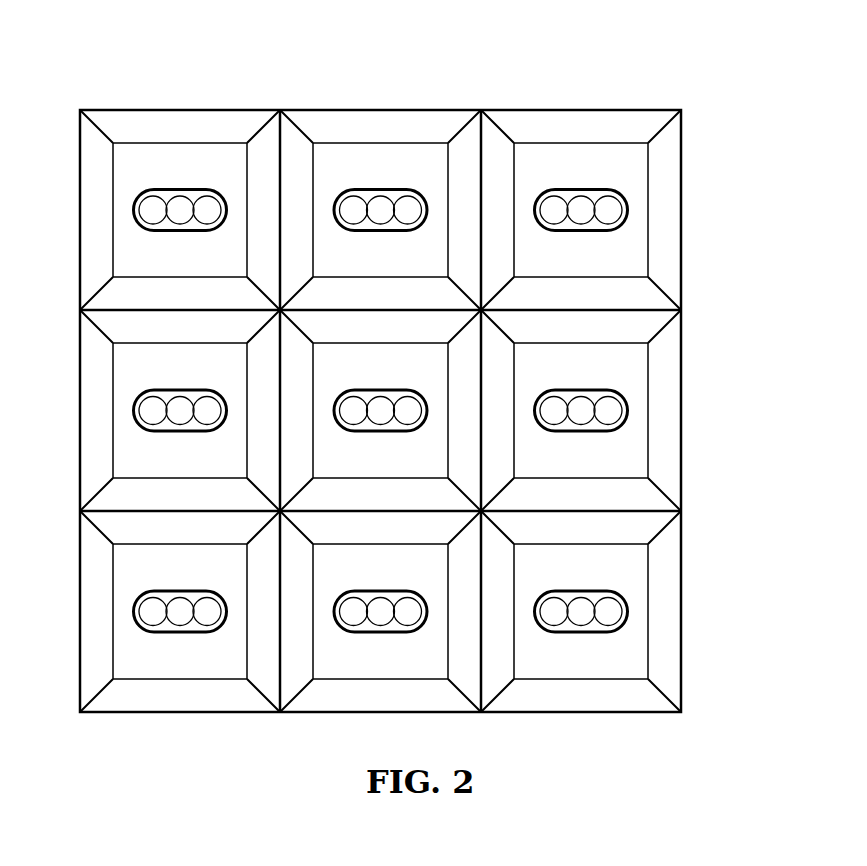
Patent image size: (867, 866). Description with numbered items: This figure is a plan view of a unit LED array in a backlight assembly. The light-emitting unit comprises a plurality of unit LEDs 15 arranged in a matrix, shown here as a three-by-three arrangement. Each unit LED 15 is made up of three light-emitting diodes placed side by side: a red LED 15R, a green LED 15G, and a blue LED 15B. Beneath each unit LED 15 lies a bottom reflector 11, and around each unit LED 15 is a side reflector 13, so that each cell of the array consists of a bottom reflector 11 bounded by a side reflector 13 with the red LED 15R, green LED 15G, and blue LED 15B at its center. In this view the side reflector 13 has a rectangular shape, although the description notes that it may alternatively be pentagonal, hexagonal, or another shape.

The bottom reflector 11 is at (593, 178).
The side reflector 13 is at (668, 202).
The unit LED 15 is at (391, 121).
The red LED 15R is at (353, 205).
The green LED 15G is at (382, 205).
The blue LED 15B is at (437, 143).